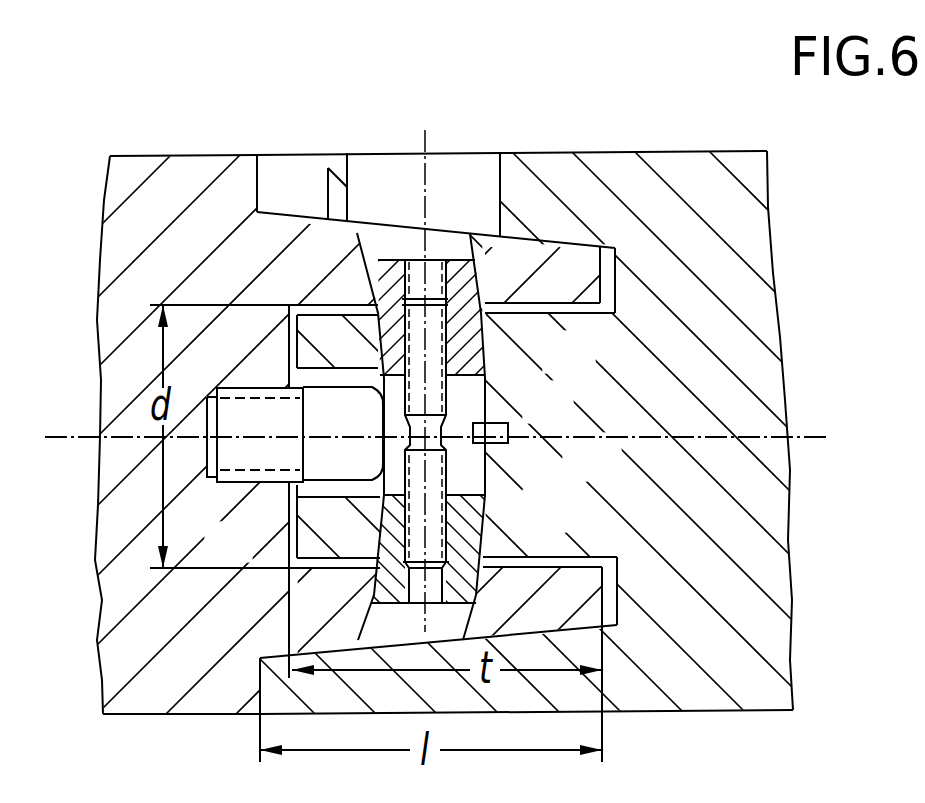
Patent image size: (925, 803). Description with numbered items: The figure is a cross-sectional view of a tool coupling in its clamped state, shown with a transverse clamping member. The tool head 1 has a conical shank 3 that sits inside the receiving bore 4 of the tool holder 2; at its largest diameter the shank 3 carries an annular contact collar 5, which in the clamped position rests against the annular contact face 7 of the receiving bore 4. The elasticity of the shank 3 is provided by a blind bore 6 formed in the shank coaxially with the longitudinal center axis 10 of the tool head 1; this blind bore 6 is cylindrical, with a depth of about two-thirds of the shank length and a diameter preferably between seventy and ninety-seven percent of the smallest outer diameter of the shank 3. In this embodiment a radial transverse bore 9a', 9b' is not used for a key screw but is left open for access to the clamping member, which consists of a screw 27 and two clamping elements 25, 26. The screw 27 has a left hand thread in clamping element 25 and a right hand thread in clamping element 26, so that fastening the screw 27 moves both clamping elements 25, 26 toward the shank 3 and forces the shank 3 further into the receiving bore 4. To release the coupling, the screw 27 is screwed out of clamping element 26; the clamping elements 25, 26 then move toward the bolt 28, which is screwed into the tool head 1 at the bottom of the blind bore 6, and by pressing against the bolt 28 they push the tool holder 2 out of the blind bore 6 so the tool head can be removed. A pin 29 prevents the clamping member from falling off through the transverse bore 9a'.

The tool head 1 is at (165, 692).
The tool holder 2 is at (683, 688).
The conical shank 3 is at (577, 593).
The receiving bore 4 is at (328, 168).
The annular contact collar 5 is at (258, 693).
The blind bore 6 is at (557, 303).
The annular contact face 7 is at (258, 187).
The radial transverse bore 9a' is at (485, 159).
The radial transverse bore 9b' is at (421, 356).
The longitudinal center axis 10 is at (63, 440).
The clamping element 25 is at (492, 342).
The clamping element 26 is at (493, 522).
The screw 27 is at (437, 400).
The bolt 28 is at (237, 458).
The pin 29 is at (500, 438).